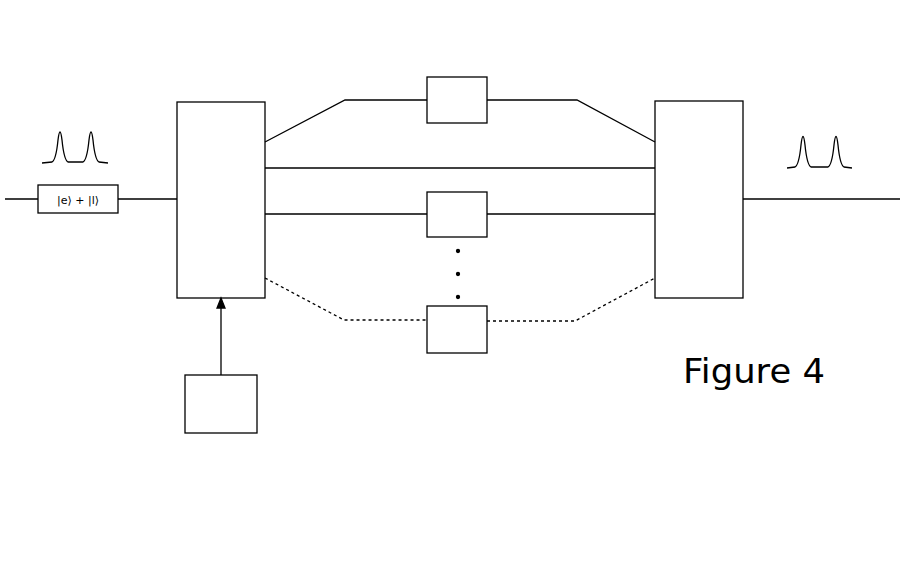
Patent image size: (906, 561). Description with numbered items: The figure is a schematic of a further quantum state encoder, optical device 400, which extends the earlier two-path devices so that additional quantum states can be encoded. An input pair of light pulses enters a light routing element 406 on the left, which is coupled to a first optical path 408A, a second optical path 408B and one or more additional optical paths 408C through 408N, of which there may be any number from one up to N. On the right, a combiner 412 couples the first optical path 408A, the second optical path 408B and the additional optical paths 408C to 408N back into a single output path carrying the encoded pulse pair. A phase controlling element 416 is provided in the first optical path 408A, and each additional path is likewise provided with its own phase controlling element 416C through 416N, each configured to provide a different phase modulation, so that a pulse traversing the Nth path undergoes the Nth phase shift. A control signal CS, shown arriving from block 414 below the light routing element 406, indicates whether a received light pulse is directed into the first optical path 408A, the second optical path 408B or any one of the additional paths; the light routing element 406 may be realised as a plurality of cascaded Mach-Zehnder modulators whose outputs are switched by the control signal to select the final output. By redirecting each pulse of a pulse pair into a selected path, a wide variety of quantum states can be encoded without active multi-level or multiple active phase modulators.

The optical device 400 is at (288, 52).
The light routing element 406 is at (221, 200).
The first optical path 408A is at (460, 111).
The second optical path 408B is at (460, 158).
The additional optical path 408C is at (460, 228).
The Nth additional optical path 408N is at (460, 299).
The combiner 412 is at (699, 199).
The controller 414 is at (221, 365).
The phase controlling element 416 is at (487, 77).
The phase controlling element 416C is at (487, 237).
The phase controlling element 416N is at (487, 353).